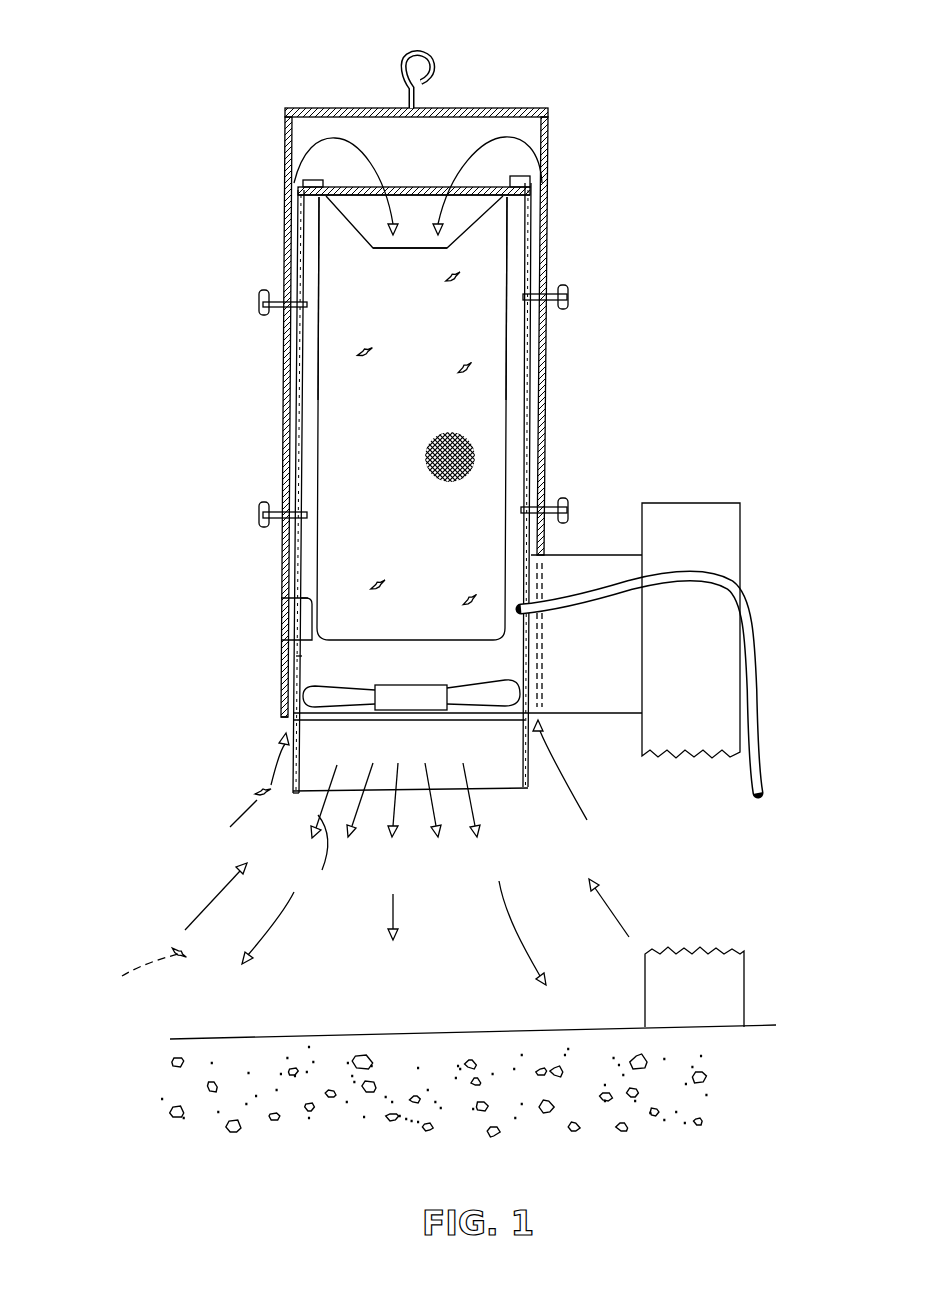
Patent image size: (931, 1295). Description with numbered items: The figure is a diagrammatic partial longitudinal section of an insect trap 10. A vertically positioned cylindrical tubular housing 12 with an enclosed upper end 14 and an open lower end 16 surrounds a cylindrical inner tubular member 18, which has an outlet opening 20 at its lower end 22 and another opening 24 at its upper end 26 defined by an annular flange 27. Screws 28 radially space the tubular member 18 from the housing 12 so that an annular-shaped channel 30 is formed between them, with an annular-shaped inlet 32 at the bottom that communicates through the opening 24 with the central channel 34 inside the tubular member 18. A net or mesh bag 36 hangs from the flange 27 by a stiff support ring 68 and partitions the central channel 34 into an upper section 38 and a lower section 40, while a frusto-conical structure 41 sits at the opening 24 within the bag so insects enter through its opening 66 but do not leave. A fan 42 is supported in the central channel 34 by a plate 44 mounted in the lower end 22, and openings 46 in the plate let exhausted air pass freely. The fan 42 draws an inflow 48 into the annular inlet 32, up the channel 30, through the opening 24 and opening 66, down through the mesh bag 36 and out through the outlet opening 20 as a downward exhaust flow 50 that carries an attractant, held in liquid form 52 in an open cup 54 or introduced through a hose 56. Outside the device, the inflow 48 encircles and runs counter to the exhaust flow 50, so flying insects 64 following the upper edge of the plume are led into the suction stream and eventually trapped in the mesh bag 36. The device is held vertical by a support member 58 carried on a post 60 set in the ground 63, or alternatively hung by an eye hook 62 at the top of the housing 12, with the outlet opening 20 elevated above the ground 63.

The insect trap 10 is at (262, 148).
The tubular housing 12 is at (550, 130).
The enclosed upper end 14 is at (319, 108).
The open lower end 16 is at (282, 690).
The inner tubular member 18 is at (532, 383).
The outlet opening 20 is at (504, 792).
The lower end 22 is at (292, 795).
The opening 24 is at (423, 190).
The upper end 26 is at (297, 197).
The annular flange 27 is at (533, 197).
The screws 28 is at (264, 315).
The annular-shaped channel 30 is at (297, 405).
The annular-shaped inlet 32 is at (287, 725).
The central channel 34 is at (512, 248).
The mesh bag 36 is at (508, 466).
The upper section 38 is at (330, 257).
The lower section 40 is at (313, 656).
The frusto-conical structure 41 is at (470, 226).
The fan 42 is at (447, 714).
The plate 44 is at (350, 718).
The openings 46 is at (490, 718).
The inflow 48 is at (277, 762).
The exhaust flow 50 is at (294, 903).
The liquid form attractant 52 is at (300, 620).
The open cup 54 is at (300, 597).
The hose 56 is at (597, 614).
The support member 58 is at (598, 554).
The post 60 is at (690, 503).
The eye hook 62 is at (414, 50).
The ground 63 is at (219, 1036).
The flying insects 64 is at (457, 282).
The opening 66 is at (387, 251).
The stiff support ring 68 is at (510, 176).